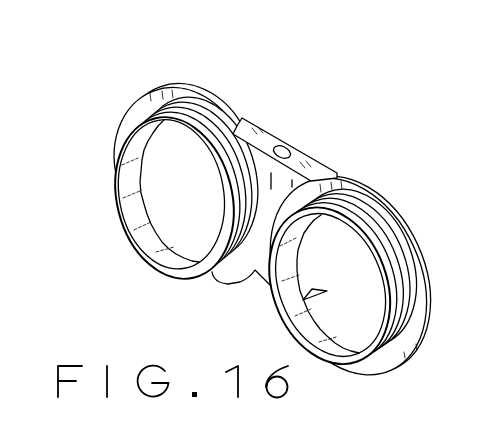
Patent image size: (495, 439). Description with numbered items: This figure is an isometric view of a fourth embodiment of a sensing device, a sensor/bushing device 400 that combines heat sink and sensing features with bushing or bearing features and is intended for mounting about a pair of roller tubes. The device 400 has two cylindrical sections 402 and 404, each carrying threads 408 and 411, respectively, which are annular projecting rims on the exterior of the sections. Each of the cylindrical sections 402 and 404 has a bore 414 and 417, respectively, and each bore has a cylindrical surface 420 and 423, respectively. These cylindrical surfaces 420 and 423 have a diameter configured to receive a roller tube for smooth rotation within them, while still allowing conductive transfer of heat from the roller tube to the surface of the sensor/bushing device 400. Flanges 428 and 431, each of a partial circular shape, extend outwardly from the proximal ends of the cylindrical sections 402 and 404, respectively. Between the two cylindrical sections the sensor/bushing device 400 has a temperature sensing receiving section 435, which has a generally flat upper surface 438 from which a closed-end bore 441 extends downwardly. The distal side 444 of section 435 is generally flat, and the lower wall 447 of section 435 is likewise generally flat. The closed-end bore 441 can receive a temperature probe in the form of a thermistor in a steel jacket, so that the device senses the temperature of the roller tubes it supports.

The sensor/bushing device 400 is at (289, 120).
The cylindrical section 402 is at (103, 147).
The cylindrical section 404 is at (346, 374).
The threads 408 is at (146, 112).
The threads 411 is at (392, 273).
The bore 414 is at (173, 208).
The bore 417 is at (300, 303).
The cylindrical surface 420 is at (165, 243).
The cylindrical surface 423 is at (303, 313).
The flange 428 is at (153, 88).
The flange 431 is at (417, 333).
The temperature sensing receiving section 435 is at (320, 158).
The upper surface 438 is at (257, 140).
The closed-end bore 441 is at (290, 148).
The distal side 444 is at (300, 238).
The lower wall 447 is at (258, 286).